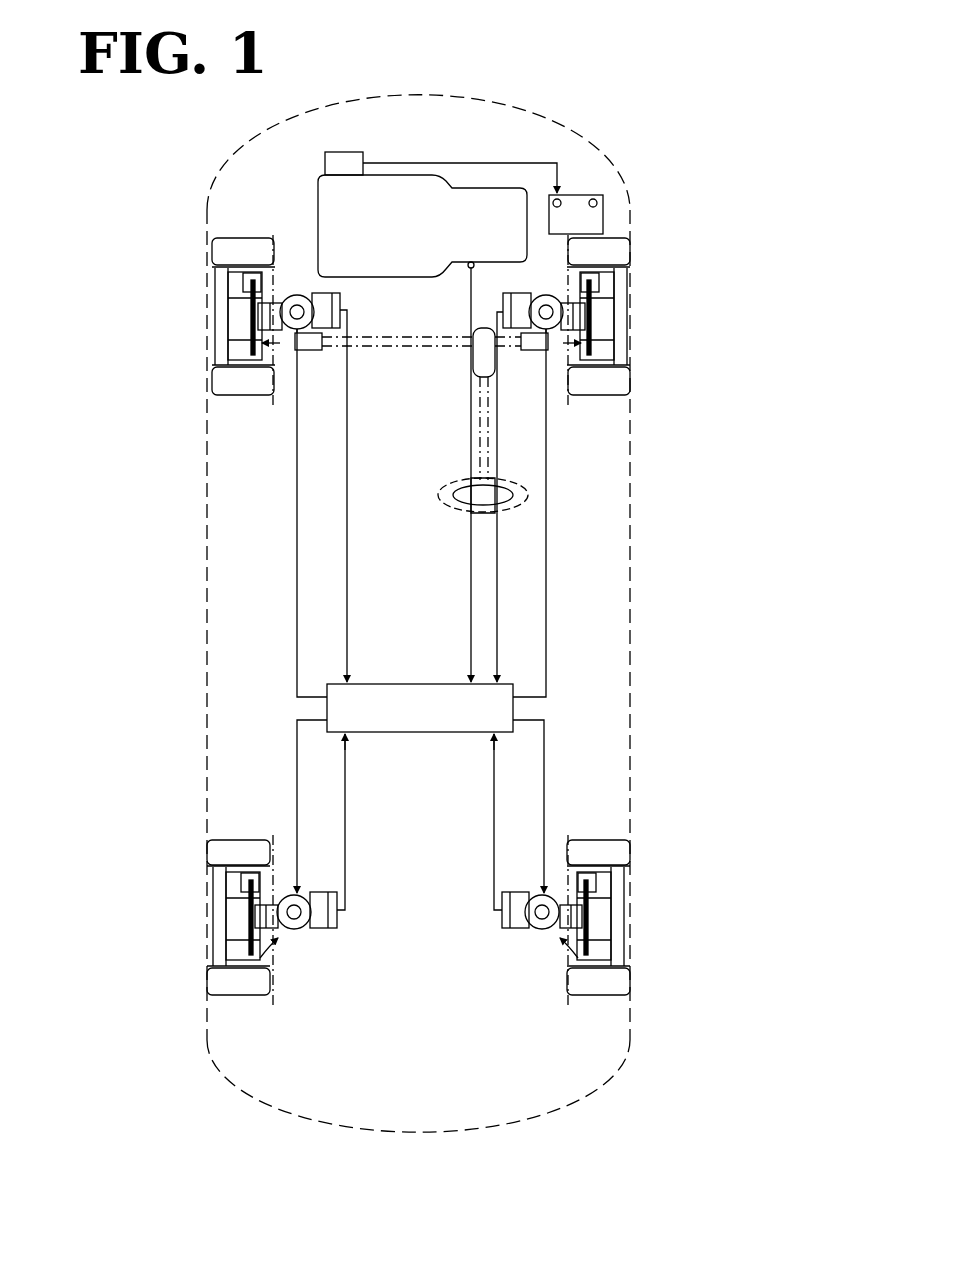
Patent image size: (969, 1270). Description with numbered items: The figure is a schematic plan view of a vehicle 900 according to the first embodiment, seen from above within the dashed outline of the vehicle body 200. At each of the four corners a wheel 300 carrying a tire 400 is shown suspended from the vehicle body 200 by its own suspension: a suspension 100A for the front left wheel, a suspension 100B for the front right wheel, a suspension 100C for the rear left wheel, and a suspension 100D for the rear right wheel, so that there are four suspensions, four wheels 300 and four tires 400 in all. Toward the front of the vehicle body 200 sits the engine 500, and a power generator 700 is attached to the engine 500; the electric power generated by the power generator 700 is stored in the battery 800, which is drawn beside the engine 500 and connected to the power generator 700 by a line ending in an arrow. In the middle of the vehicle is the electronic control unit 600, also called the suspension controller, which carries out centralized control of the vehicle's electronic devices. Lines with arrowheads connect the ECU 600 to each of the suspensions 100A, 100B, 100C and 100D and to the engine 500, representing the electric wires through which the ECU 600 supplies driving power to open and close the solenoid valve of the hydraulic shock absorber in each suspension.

The vehicle 900 is at (610, 52).
The vehicle body 200 is at (618, 176).
The wheels 300 is at (217, 282).
The tires 400 is at (222, 388).
The suspension for a front left wheel 100A is at (243, 358).
The suspension for a front right wheel 100B is at (600, 360).
The suspension for a rear left wheel 100C is at (215, 958).
The suspension for a rear right wheel 100D is at (605, 962).
The engine 500 is at (318, 216).
The electronic control unit (ECU) 600 is at (414, 736).
The power generator 700 is at (358, 152).
The battery 800 is at (597, 220).